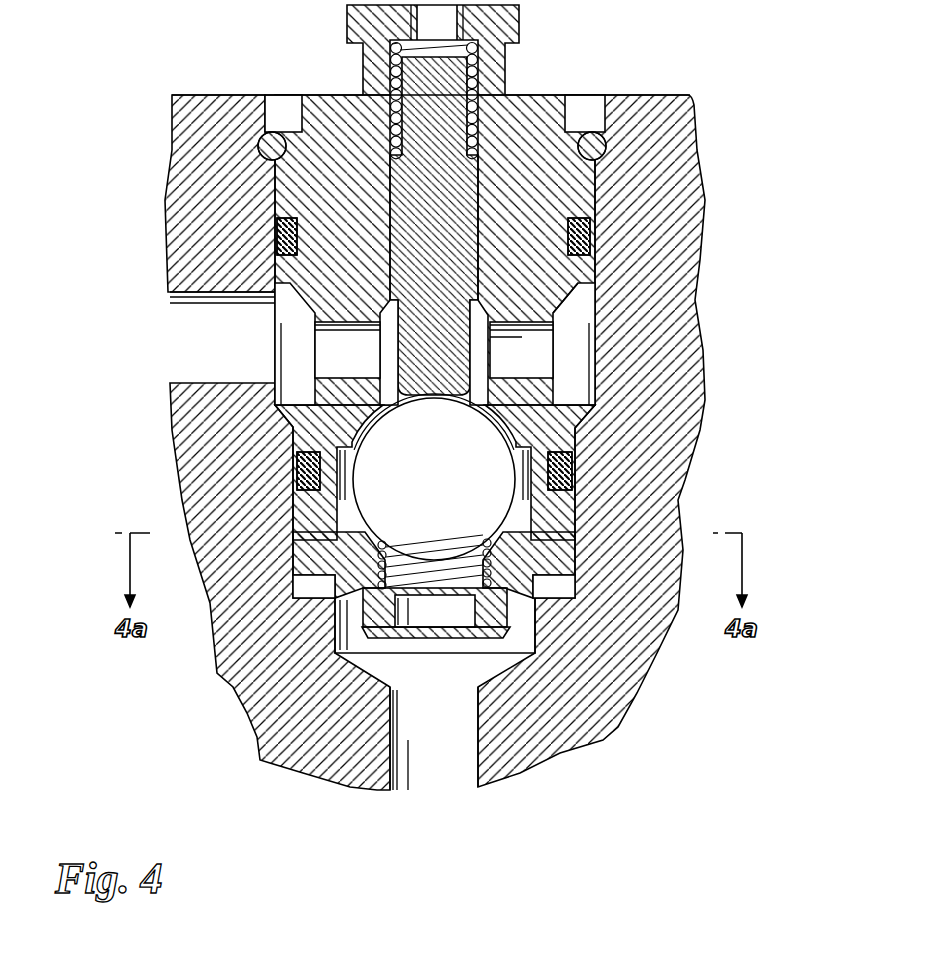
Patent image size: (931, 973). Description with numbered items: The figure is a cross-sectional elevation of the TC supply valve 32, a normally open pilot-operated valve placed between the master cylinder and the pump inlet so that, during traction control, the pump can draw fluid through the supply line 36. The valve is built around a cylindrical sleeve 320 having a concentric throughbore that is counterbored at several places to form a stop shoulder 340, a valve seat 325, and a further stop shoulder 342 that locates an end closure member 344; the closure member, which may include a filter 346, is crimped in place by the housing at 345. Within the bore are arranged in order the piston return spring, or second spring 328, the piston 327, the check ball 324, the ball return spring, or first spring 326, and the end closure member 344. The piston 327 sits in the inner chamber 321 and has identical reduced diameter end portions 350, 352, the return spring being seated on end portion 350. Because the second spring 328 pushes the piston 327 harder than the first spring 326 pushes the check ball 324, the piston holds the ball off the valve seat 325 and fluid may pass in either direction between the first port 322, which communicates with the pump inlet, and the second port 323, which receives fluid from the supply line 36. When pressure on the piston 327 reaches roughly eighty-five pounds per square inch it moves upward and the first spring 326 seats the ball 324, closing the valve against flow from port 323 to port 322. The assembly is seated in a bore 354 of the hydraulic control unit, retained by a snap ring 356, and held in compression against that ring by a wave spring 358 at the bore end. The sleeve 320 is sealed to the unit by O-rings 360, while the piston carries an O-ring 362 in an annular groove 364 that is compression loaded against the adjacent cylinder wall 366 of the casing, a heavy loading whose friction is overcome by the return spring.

The TC supply valve 32 is at (713, 328).
The supply line 36 is at (443, 758).
The cylindrical sleeve 320 is at (307, 200).
The inner chamber 321 is at (487, 377).
The first port 322 is at (268, 354).
The second port 323 is at (445, 690).
The check ball 324 is at (500, 497).
The valve seat 325 is at (527, 440).
The first spring 326 is at (508, 622).
The piston 327 is at (433, 303).
The second spring 328 is at (470, 117).
The stop shoulder 340 is at (463, 30).
The further stop shoulder 342 is at (343, 533).
The end closure member 344 is at (490, 562).
The crimp 345 is at (320, 560).
The filter 346 is at (340, 640).
The reduced diameter end portion 350 is at (438, 97).
The reduced diameter end portion 352 is at (433, 350).
The bore 354 is at (586, 322).
The snap ring 356 is at (613, 143).
The wave spring 358 is at (367, 605).
The O-rings 360 is at (300, 237).
The O-ring 362 is at (590, 232).
The annular groove 364 is at (590, 277).
The cylinder wall 366 is at (407, 173).